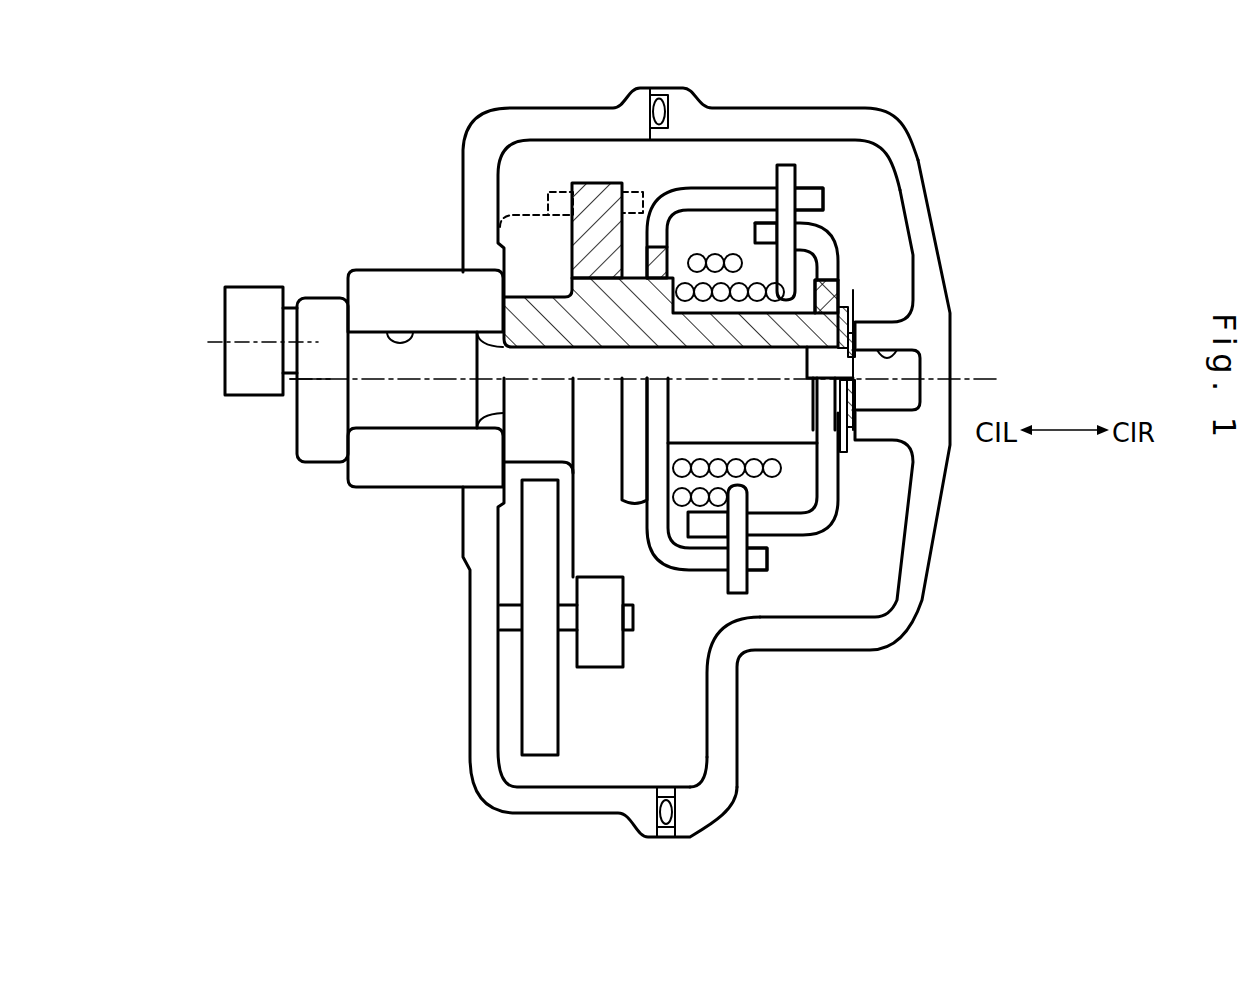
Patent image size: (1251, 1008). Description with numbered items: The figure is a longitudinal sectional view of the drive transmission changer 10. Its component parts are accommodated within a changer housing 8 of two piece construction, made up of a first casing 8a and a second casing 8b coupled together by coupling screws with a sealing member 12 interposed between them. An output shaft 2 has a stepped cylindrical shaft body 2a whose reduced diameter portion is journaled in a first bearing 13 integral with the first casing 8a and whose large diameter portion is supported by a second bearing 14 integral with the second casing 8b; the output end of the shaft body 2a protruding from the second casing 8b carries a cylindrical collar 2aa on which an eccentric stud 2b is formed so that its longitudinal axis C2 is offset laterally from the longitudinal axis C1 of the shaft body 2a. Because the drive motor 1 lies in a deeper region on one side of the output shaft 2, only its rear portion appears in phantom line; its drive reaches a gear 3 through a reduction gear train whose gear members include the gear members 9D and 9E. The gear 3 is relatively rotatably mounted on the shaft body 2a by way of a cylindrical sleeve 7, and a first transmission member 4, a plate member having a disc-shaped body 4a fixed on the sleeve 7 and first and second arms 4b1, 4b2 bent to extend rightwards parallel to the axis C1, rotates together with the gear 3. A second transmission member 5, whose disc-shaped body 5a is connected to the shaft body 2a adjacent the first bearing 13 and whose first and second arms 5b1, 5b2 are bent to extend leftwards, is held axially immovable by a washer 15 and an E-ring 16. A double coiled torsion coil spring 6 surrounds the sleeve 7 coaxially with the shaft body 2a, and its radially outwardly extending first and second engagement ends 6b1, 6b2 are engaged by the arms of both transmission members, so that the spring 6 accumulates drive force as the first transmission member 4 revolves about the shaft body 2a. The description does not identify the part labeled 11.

The drive motor 1 is at (530, 213).
The output shaft 2 is at (403, 436).
The shaft body 2a is at (530, 327).
The cylindrical collar 2aa is at (322, 464).
The eccentric stud 2b is at (258, 287).
The gear 3 is at (590, 183).
The first transmission member 4 is at (708, 645).
The disc-shaped body 4a is at (738, 733).
The first arm 4b1 is at (825, 190).
The second arm 4b2 is at (768, 570).
The second transmission member 5 is at (822, 541).
The disc-shaped body 5a is at (780, 470).
The first arm 5b1 is at (762, 222).
The second arm 5b2 is at (712, 540).
The torsion coil spring 6 is at (790, 466).
The first engagement end 6b1 is at (793, 166).
The second engagement end 6b2 is at (745, 594).
The cylindrical sleeve 7 is at (553, 292).
The changer housing 8 is at (668, 81).
The first casing 8a is at (930, 228).
The second casing 8b is at (469, 661).
The gear member 9D is at (537, 757).
The gear member 9E is at (600, 667).
The drive transmission changer 10 is at (1046, 344).
The inner wall 11 is at (890, 281).
The sealing member 12 is at (655, 95).
The first bearing 13 is at (890, 350).
The second bearing 14 is at (390, 338).
The washer 15 is at (847, 307).
The E-ring 16 is at (857, 392).
The longitudinal axis C1 is at (323, 380).
The longitudinal axis C2 is at (228, 342).